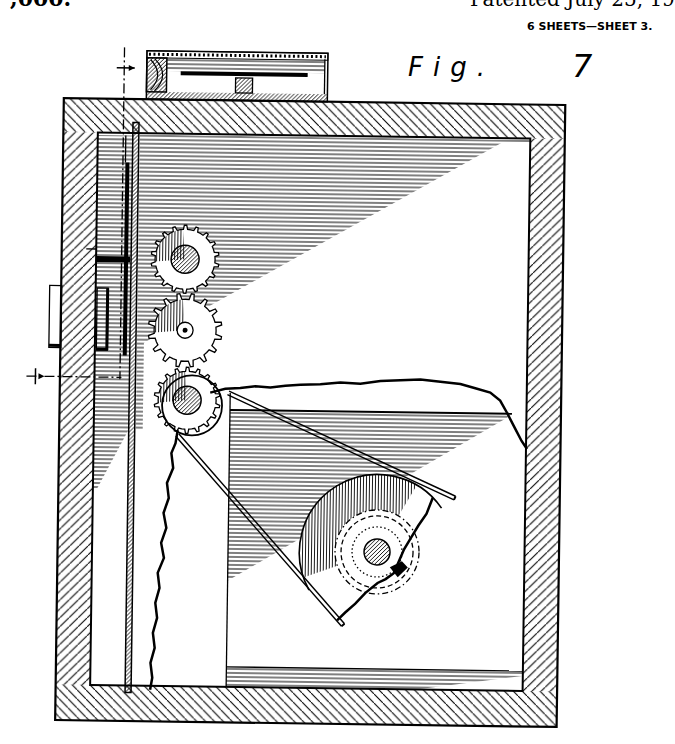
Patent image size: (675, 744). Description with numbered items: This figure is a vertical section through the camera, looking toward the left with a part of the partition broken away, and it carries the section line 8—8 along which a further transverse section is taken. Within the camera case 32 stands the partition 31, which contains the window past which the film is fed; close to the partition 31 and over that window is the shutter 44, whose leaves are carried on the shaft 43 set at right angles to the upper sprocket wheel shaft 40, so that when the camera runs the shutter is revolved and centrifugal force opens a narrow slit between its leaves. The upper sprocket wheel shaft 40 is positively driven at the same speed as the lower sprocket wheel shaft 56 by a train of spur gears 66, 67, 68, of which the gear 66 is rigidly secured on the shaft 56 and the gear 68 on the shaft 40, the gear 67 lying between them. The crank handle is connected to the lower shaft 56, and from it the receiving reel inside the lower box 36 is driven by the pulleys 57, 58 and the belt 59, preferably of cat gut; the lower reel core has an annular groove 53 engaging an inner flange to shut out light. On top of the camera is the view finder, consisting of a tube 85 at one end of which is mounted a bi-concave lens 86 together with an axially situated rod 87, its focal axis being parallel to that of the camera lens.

The section line 8- 8 is at (80, 223).
The partition 31 is at (125, 146).
The camera case 32 is at (537, 122).
The lower box 36 is at (240, 641).
The upper sprocket wheel shaft 40 is at (198, 258).
The shaft 43 is at (94, 251).
The shutter 44 is at (125, 183).
The annular groove 53 is at (405, 570).
The lower sprocket wheel shaft 56 is at (173, 417).
The pulley 57 is at (198, 420).
The pulley 58 is at (406, 516).
The belt 59 is at (285, 558).
The spur gear 66 is at (214, 393).
The spur gear 67 is at (211, 330).
The spur gear 68 is at (208, 264).
The tube 85 is at (224, 51).
The bi-concave lens 86 is at (159, 64).
The rod 87 is at (273, 73).